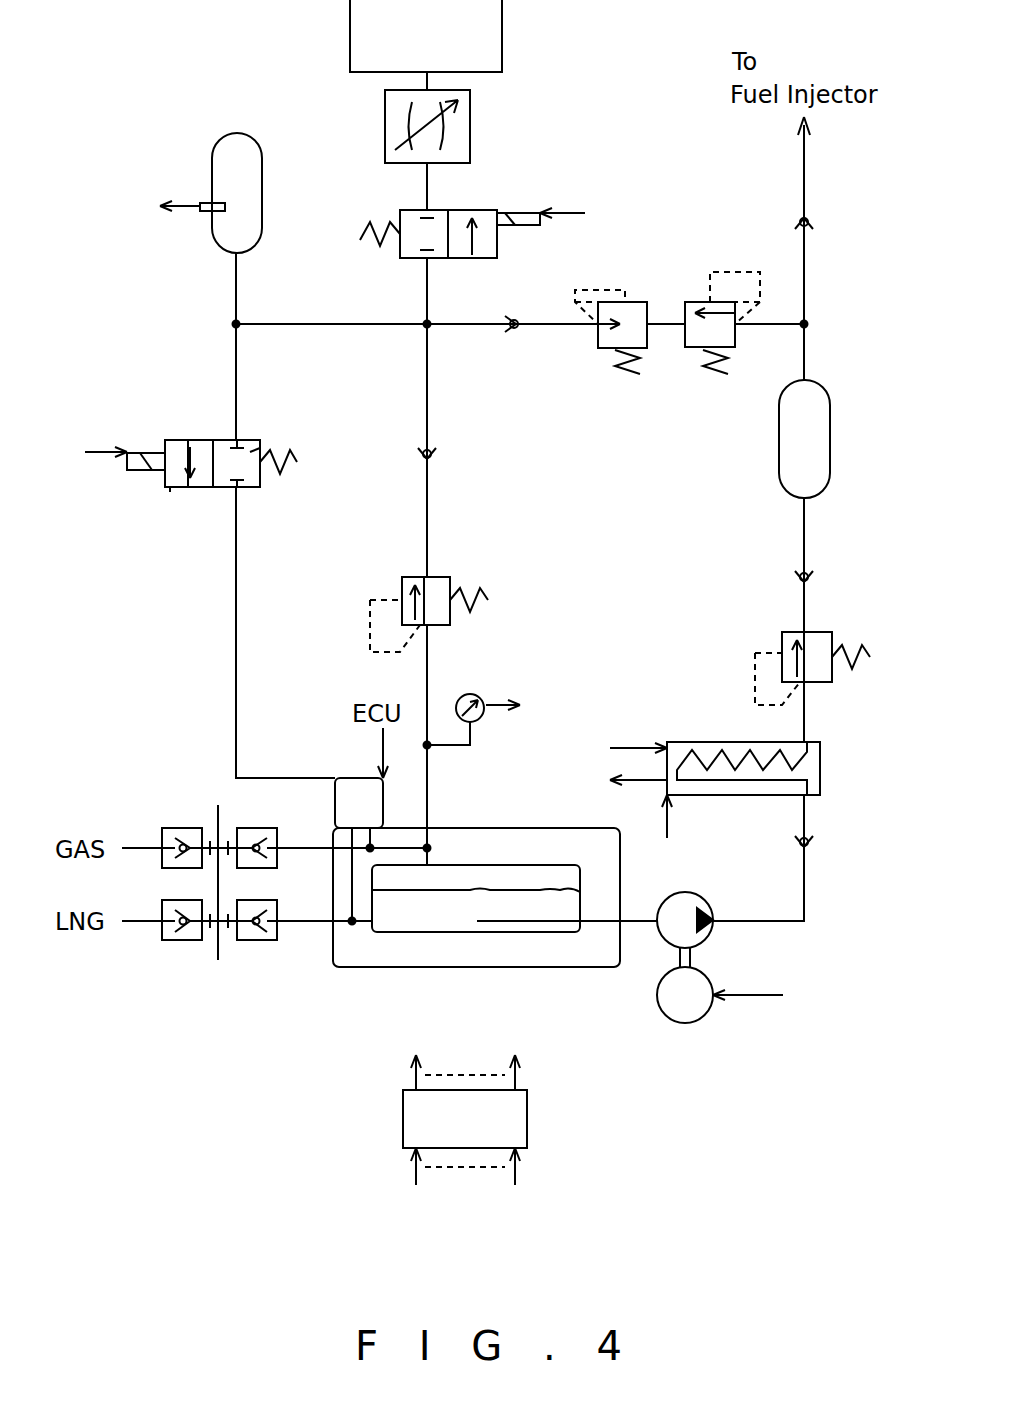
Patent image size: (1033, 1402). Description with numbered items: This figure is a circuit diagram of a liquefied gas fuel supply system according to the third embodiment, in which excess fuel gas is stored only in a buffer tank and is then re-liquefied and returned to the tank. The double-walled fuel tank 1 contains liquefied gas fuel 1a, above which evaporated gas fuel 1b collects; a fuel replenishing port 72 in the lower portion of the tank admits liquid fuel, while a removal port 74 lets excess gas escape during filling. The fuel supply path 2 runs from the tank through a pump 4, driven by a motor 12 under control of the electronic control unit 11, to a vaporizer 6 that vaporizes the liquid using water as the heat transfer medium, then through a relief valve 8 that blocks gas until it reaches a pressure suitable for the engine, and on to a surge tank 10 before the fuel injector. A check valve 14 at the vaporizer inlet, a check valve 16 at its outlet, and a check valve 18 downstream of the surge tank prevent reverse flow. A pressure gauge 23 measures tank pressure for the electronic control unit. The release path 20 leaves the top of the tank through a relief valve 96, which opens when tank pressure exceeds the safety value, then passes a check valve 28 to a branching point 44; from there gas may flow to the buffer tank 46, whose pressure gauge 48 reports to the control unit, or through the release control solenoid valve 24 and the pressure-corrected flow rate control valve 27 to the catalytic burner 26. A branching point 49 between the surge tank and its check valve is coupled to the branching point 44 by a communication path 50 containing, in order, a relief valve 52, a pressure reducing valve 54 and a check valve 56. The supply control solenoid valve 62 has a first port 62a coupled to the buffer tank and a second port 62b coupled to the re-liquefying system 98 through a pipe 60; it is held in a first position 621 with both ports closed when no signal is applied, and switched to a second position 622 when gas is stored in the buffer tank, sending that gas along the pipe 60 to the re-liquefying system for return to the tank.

The fuel tank 1 is at (332, 945).
The liquefied gas fuel 1a is at (440, 918).
The evaporated gas fuel 1b is at (440, 878).
The fuel supply path 2 is at (804, 553).
The pump 4 is at (715, 935).
The vaporizer 6 is at (670, 742).
The relief valve 8 is at (790, 632).
The surge tank 10 is at (779, 447).
The electronic control unit 11 is at (520, 1120).
The motor 12 is at (685, 1023).
The check valve 14 is at (812, 842).
The check valve 16 is at (812, 580).
The check valve 18 is at (812, 225).
The release path 20 is at (428, 522).
The pressure gauge 23 is at (478, 695).
The release control solenoid valve 24 is at (470, 210).
The catalytic burner 26 is at (502, 22).
The pressure-corrected flow rate control valve 27 is at (470, 125).
The check valve 28 is at (432, 450).
The branching point 44 is at (432, 333).
The buffer tank 46 is at (212, 180).
The pressure gauge 48 is at (202, 212).
The branching point 49 is at (812, 324).
The communication path 50 is at (661, 324).
The relief valve 52 is at (705, 302).
The pressure reducing valve 54 is at (620, 348).
The check valve 56 is at (516, 312).
The pipe 60 is at (236, 732).
The supply control solenoid valve 62 is at (173, 440).
The first port 62a is at (240, 422).
The first position 621 is at (252, 452).
The second port 62b is at (240, 500).
The second position 622 is at (173, 490).
The fuel replenishing port 72 is at (255, 940).
The removal port 74 is at (242, 828).
The relief valve 96 is at (402, 577).
The re-liquefying system 98 is at (335, 805).